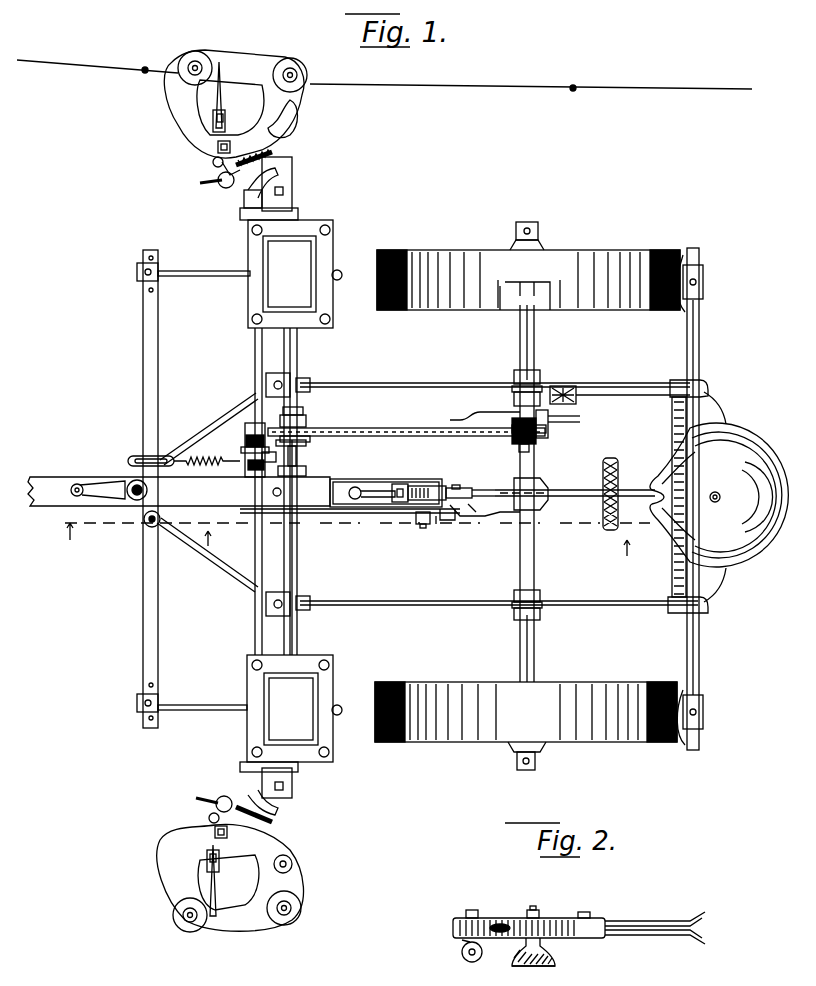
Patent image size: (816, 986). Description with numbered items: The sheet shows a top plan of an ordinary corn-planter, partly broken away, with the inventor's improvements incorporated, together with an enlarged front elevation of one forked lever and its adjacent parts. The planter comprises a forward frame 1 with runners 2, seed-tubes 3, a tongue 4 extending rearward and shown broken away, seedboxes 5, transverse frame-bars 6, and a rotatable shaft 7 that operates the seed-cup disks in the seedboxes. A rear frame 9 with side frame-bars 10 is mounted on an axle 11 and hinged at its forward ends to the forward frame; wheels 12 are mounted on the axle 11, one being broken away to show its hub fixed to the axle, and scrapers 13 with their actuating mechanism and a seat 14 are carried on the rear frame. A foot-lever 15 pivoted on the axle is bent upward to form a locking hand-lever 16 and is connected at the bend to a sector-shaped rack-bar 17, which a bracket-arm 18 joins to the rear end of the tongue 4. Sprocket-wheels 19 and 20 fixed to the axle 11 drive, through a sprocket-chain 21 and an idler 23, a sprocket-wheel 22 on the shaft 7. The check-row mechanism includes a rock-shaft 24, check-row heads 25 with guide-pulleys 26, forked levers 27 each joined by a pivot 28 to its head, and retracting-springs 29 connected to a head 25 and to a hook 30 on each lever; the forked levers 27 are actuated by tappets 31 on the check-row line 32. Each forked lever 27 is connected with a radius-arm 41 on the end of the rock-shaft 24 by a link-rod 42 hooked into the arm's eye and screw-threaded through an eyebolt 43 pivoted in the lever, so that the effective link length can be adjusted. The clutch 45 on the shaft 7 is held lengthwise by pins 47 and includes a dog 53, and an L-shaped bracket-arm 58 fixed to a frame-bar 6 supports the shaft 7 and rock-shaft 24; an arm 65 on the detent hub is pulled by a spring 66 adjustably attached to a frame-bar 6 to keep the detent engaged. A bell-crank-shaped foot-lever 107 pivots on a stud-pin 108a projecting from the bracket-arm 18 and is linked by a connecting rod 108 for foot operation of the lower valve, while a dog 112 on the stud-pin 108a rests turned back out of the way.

In FIG. 1, the forward frame 1 is at (105, 543).
In FIG. 1, the runners 2 is at (190, 271).
In FIG. 1, the seed-tubes 3 is at (357, 535).
In FIG. 1, the tongue 4 is at (66, 477).
In FIG. 1, the seedboxes 5 is at (294, 491).
In FIG. 1, the transverse frame-bars 6 is at (268, 637).
In FIG. 1, the rotatable shaft 7 is at (290, 347).
In FIG. 1, the rear frame 9 is at (586, 384).
In FIG. 1, the side frame-bars 10 is at (497, 487).
In FIG. 1, the axle 11 is at (534, 331).
In FIG. 1, the wheels 12 is at (472, 258).
In FIG. 1, the scrapers 13 is at (687, 300).
In FIG. 1, the seat 14 is at (719, 495).
In FIG. 1, the foot-lever 15 is at (602, 478).
In FIG. 1, the locking hand-lever 16 is at (476, 489).
In FIG. 1, the sector-shaped rack-bar 17 is at (425, 485).
In FIG. 1, the bracket-arm 18 is at (398, 480).
In FIG. 1, the sprocket-wheel 19 is at (580, 422).
In FIG. 1, the sprocket-wheel 20 is at (546, 432).
In FIG. 1, the sprocket-chain 21 is at (380, 428).
In FIG. 1, the sprocket-wheel 22 is at (310, 436).
In FIG. 1, the idler 23 is at (436, 441).
In FIG. 1, the rock-shaft 24 is at (262, 612).
In FIG. 1, the check-row heads 25 is at (186, 122).
In FIG. 2, the check-row heads 25 is at (556, 960).
In FIG. 1, the guide-pulleys 26 is at (188, 53).
In FIG. 1, the forked levers 27 is at (222, 97).
In FIG. 2, the forked levers 27 is at (579, 921).
In FIG. 1, the pivot 28 is at (218, 146).
In FIG. 2, the pivot 28 is at (533, 906).
In FIG. 1, the retracting-springs 29 is at (280, 153).
In FIG. 1, the hook 30 is at (213, 163).
In FIG. 2, the hook 30 is at (500, 924).
In FIG. 1, the tappets 31 is at (359, 79).
In FIG. 1, the check-row line 32 is at (384, 74).
In FIG. 1, the radius-arm 41 is at (252, 190).
In FIG. 1, the link-rod 42 is at (192, 489).
In FIG. 1, the eyebolt 43 is at (220, 184).
In FIG. 2, the eyebolt 43 is at (462, 945).
In FIG. 1, the clutch 45 is at (306, 444).
In FIG. 1, the pins 47 is at (300, 415).
In FIG. 1, the dog 53 is at (246, 440).
In FIG. 1, the L-shaped bracket-arm 58 is at (296, 455).
In FIG. 1, the arm 65 is at (207, 453).
In FIG. 1, the spring 66 is at (168, 455).
In FIG. 1, the bell-crank-shaped foot-lever 107 is at (485, 506).
In FIG. 1, the connecting rod or link 108 is at (384, 515).
In FIG. 1, the stud-pin 108a is at (424, 528).
In FIG. 1, the dog 112 is at (446, 520).